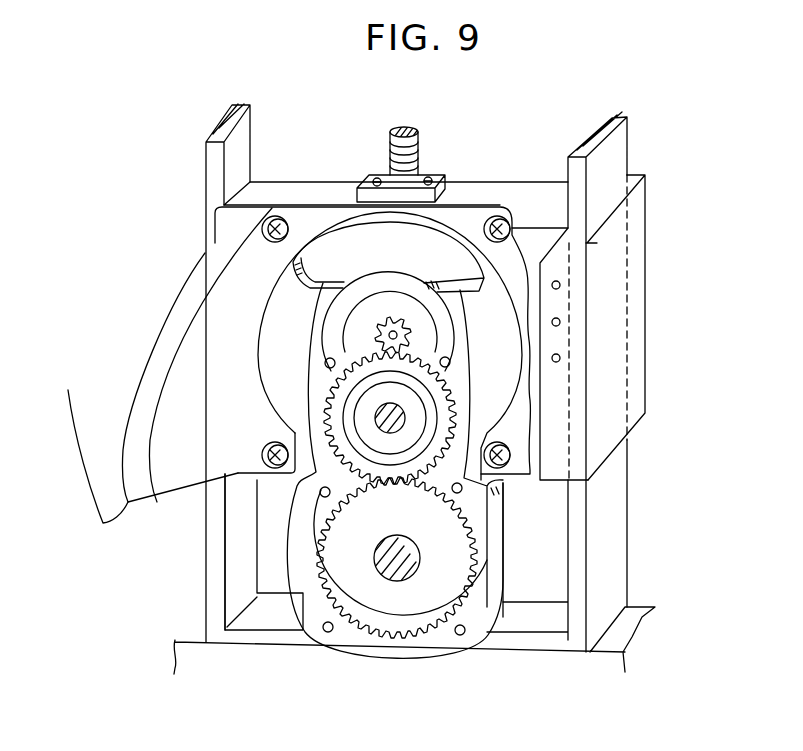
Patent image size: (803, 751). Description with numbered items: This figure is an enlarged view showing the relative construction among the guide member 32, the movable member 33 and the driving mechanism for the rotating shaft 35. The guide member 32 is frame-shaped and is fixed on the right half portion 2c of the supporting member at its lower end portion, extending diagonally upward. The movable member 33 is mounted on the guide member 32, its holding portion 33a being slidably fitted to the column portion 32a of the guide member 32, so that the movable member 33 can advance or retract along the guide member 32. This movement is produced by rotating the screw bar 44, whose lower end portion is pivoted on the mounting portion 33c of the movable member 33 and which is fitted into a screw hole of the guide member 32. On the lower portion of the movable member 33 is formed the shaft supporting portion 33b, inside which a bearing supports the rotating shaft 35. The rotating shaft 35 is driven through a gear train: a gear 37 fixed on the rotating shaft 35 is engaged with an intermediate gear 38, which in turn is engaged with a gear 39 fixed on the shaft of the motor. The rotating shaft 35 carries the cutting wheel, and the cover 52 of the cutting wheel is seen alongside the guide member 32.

The right half portion 2c is at (633, 632).
The guide member 32 is at (203, 197).
The column portion 32a is at (207, 543).
The movable member 33 is at (520, 240).
The holding portion 33a is at (641, 330).
The shaft supporting portion 33b is at (490, 573).
The mounting portion 33c is at (432, 176).
The rotating shaft 35 is at (393, 583).
The gear 37 is at (463, 541).
The intermediate gear 38 is at (447, 390).
The gear 39 is at (412, 332).
The screw bar 44 is at (420, 140).
The cover 52 is at (85, 482).